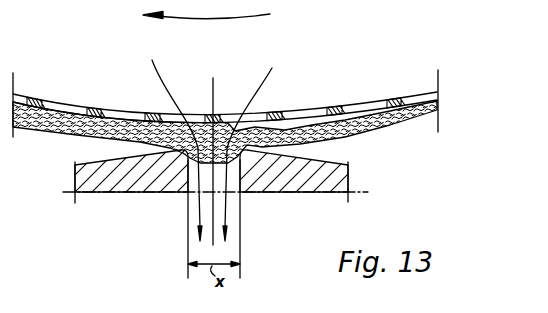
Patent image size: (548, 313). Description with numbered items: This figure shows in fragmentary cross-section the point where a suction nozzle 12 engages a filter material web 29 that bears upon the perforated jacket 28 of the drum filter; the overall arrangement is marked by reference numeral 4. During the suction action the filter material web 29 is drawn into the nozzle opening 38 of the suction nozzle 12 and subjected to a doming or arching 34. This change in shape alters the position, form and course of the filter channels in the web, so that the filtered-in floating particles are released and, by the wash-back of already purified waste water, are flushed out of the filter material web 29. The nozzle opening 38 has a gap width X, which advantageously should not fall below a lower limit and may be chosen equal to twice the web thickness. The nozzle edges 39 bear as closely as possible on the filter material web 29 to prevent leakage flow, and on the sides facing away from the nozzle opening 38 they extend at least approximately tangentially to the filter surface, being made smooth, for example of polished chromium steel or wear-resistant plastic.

The forming apparatus 4 is at (72, 64).
The suction nozzle 12 is at (113, 185).
The perforated jacket 28 is at (333, 106).
The filter material web 29 is at (412, 102).
The doming or arching 34 is at (220, 142).
The nozzle opening 38 is at (193, 179).
The nozzle edge 39 is at (264, 157).